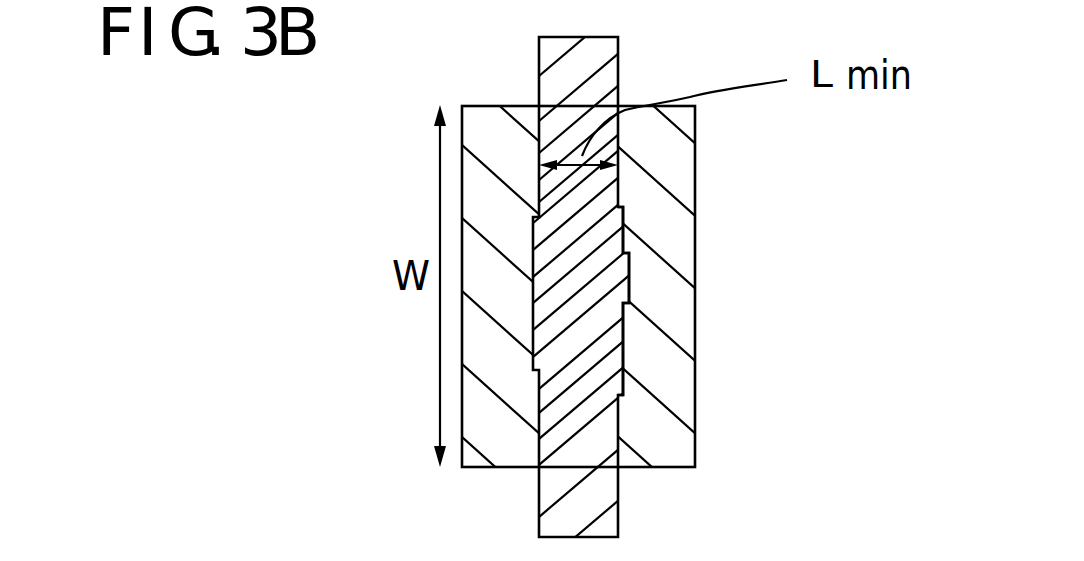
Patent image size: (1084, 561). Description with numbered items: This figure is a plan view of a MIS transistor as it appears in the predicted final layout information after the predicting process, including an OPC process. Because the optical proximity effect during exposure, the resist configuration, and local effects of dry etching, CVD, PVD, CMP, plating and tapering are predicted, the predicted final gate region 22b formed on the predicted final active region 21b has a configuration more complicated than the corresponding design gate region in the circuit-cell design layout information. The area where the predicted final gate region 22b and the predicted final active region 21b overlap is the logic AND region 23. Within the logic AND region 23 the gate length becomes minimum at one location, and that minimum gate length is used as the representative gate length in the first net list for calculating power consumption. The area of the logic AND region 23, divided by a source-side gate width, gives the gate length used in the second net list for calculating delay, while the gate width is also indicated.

The predicted final active region 21b is at (695, 185).
The predicted final gate region 22b is at (618, 72).
The logic AND region 23 is at (625, 360).